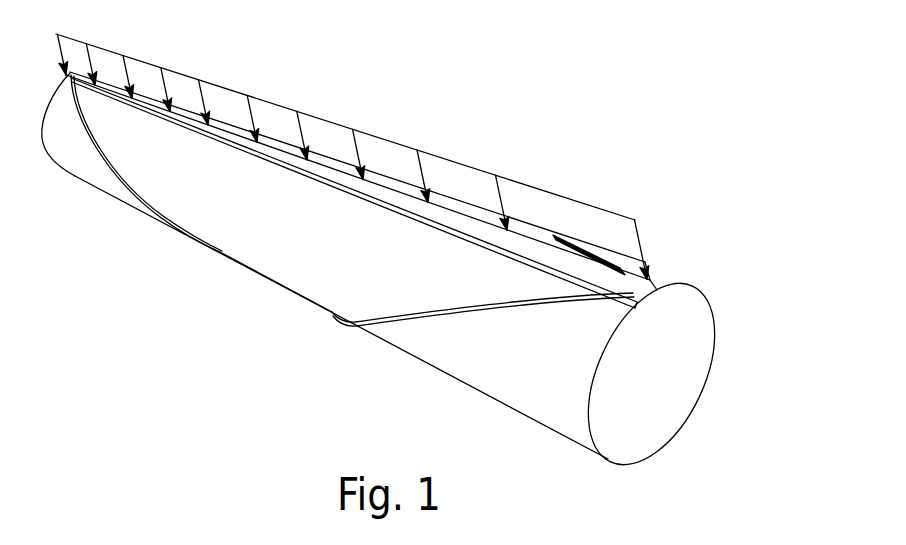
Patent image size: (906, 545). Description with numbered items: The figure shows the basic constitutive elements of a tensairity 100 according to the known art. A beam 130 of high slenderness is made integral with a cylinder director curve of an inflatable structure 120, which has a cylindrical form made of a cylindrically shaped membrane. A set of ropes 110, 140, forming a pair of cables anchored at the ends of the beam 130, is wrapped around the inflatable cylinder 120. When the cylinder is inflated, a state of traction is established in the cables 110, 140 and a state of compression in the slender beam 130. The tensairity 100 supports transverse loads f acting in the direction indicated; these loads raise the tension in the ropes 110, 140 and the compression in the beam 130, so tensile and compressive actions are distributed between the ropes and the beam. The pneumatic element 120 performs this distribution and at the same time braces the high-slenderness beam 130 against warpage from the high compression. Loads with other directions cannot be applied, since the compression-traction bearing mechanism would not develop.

The tensairity 100 is at (720, 177).
The rope 110 is at (90, 155).
The inflatable structure 120 is at (211, 213).
The beam 130 is at (314, 196).
The rope 140 is at (417, 328).